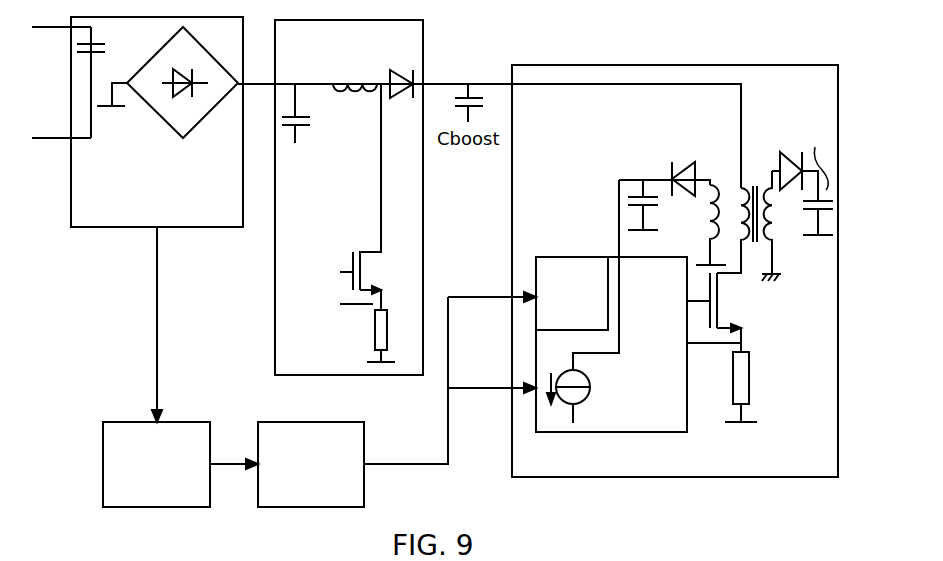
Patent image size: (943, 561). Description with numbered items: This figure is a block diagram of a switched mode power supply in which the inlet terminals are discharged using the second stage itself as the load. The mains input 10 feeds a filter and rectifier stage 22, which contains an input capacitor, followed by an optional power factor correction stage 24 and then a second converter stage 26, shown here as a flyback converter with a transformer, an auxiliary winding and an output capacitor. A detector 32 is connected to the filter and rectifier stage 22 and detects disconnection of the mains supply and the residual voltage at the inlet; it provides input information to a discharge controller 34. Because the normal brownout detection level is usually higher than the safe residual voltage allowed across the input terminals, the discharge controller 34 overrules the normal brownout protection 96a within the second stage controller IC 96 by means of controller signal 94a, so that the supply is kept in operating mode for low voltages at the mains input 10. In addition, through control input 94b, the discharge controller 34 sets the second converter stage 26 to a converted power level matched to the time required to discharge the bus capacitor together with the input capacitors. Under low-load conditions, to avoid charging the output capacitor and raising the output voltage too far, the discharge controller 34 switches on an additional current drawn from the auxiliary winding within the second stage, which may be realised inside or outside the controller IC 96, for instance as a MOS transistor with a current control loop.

The mains input 10 is at (63, 86).
The filter and rectifier stage 22 is at (110, 211).
The power factor correction stage 24 is at (328, 360).
The second converter stage 26 is at (675, 271).
The detector 32 is at (172, 475).
The discharge controller 34 is at (332, 475).
The controller signal 94a is at (498, 296).
The control input 94b is at (500, 390).
The second stage controller IC 96 is at (611, 306).
The brownout protection 96a is at (598, 308).